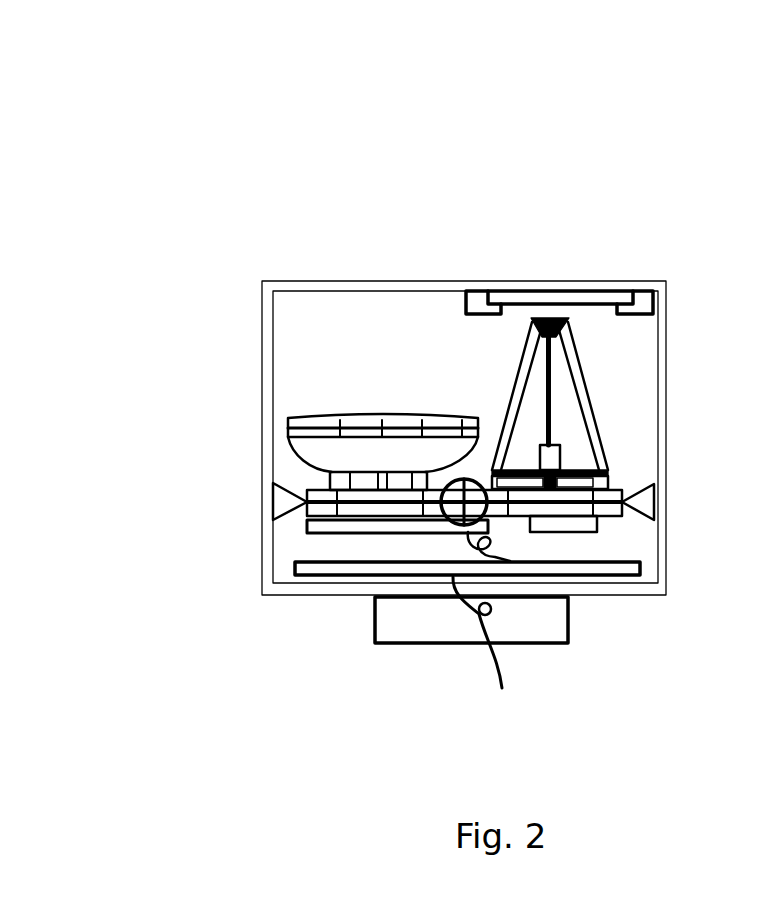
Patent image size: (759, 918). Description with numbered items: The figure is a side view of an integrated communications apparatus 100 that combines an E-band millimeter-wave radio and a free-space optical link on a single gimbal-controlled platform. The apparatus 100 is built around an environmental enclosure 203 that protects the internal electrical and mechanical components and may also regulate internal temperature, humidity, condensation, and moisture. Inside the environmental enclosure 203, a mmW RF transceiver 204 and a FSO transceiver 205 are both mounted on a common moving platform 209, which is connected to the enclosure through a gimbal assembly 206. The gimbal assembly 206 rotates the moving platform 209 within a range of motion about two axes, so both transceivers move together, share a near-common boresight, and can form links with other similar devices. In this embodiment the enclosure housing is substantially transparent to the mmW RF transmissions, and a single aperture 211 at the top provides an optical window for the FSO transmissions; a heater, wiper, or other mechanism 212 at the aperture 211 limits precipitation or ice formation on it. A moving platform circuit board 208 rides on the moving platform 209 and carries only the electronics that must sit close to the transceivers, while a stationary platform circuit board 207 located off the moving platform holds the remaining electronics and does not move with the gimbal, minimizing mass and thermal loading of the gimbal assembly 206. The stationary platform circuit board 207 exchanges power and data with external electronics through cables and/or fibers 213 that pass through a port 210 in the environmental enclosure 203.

The apparatus 100 is at (125, 51).
The environmental enclosure 203 is at (430, 281).
The mmW RF transceiver 204 is at (387, 415).
The FSO transceiver 205 is at (597, 405).
The gimbal assembly 206 is at (442, 490).
The stationary platform circuit board 207 is at (352, 577).
The moving platform circuit board 208 is at (307, 530).
The moving platform 209 is at (602, 507).
The port 210 is at (569, 613).
The aperture 211 is at (560, 290).
The mechanism 212 is at (653, 302).
The cables and/or fibers 213 is at (476, 669).